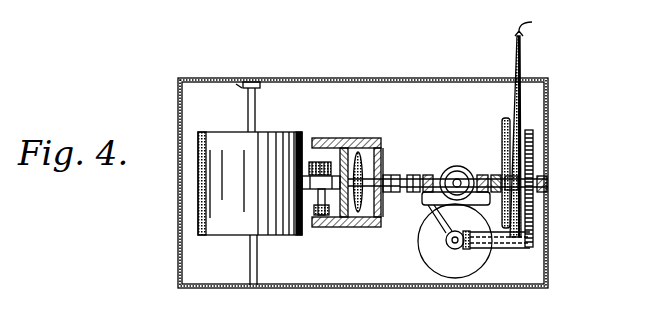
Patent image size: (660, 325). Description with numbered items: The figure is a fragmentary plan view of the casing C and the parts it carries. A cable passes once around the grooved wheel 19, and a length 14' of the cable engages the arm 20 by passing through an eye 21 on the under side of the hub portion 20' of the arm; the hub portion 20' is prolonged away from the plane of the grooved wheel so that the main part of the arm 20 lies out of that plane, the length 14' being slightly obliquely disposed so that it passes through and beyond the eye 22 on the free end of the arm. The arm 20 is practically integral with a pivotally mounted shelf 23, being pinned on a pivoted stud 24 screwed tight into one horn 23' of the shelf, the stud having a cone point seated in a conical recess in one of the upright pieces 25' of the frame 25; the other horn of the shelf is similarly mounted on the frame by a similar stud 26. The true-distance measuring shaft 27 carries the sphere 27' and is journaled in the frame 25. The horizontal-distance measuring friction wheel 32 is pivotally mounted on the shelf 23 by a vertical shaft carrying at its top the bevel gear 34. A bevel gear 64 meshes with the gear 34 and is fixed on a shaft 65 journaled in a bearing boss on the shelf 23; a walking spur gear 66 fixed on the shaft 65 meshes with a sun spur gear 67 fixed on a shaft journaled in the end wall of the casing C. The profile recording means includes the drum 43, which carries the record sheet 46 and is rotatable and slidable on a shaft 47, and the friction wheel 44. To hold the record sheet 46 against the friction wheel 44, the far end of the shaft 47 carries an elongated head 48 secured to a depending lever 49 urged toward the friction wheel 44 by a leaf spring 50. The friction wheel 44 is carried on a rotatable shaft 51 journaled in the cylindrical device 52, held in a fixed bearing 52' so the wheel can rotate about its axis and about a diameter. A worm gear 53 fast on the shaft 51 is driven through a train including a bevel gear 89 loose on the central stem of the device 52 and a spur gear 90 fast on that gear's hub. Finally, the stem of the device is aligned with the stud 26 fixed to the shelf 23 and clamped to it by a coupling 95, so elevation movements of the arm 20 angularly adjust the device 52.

The casing C is at (190, 296).
The record sheet 46 is at (250, 183).
The drum 43 is at (226, 238).
The shaft 47 is at (257, 104).
The elongated head 48 is at (246, 90).
The depending lever 49 is at (256, 80).
The leaf spring 50 is at (242, 86).
The cylindrical device 52 is at (346, 166).
The fixed bearing 52' is at (362, 161).
The bevel gear 89 is at (384, 152).
The spur gear 90 is at (356, 214).
The worm gear 53 is at (315, 160).
The friction wheel 44 is at (322, 218).
The rotatable shaft 51 is at (313, 214).
The coupling 95 is at (393, 193).
The stud 26 is at (414, 176).
The upright pieces 25' is at (436, 204).
The true-distance measuring shaft 27 is at (457, 173).
The sphere 27' is at (435, 154).
The horn 23' is at (439, 192).
The eye 21 is at (512, 187).
The pivoted stud 24 is at (513, 195).
The pivotally mounted shelf 23 is at (427, 239).
The horizontal-distance measuring friction wheel 32 is at (478, 261).
The bevel gear 34 is at (455, 244).
The hub portion 20' is at (476, 229).
The bevel gear 64 is at (466, 250).
The grooved wheel 19 is at (502, 127).
The length of the cable 14' is at (490, 96).
The arm 20 is at (535, 136).
The eye 22 is at (515, 41).
The sun spur gear 67 is at (534, 133).
The shaft 65 is at (540, 177).
The frame 25 is at (567, 169).
The walking spur gear 66 is at (533, 244).